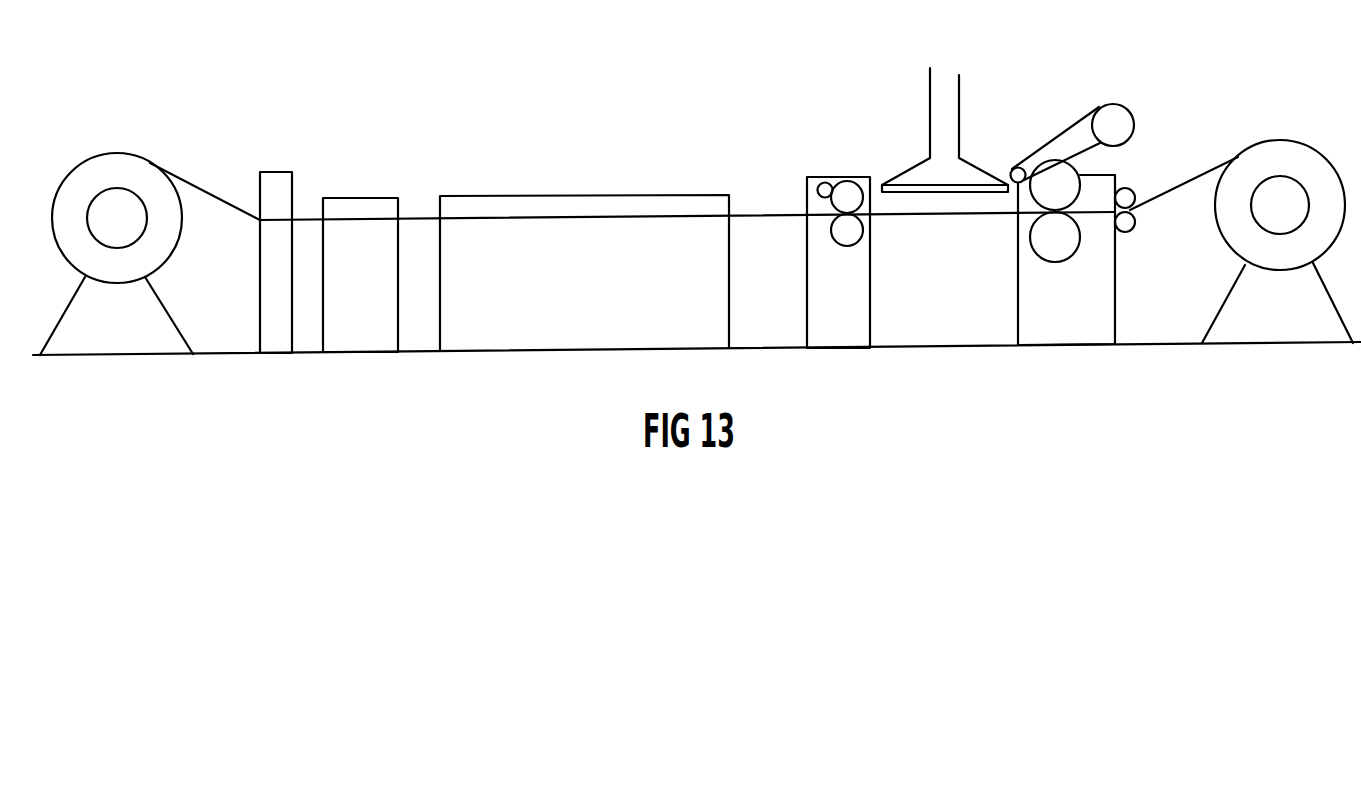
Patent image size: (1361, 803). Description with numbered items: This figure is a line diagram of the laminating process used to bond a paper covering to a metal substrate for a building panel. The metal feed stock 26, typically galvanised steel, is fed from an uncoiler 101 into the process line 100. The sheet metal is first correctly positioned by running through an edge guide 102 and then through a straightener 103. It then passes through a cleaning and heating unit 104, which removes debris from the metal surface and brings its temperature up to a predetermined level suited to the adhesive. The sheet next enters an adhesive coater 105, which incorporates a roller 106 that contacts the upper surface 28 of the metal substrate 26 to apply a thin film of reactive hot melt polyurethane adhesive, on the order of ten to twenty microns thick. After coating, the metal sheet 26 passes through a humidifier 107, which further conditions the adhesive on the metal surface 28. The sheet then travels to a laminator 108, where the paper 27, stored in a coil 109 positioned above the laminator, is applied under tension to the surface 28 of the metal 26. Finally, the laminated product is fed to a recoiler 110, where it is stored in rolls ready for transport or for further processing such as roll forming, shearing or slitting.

The process line 100 is at (578, 170).
The metal feed stock 26 is at (85, 160).
The uncoiler 101 is at (133, 177).
The upper surface 28 is at (217, 190).
The edge guide 102 is at (273, 193).
The straightener 103 is at (358, 208).
The oven 104 is at (663, 205).
The adhesive coater 105 is at (832, 177).
The roller 106 is at (847, 197).
The humidifier 107 is at (942, 103).
The paper 27 is at (1063, 132).
The laminator 108 is at (1097, 188).
The coil 109 is at (1112, 122).
The take-up roll 110 is at (1265, 158).